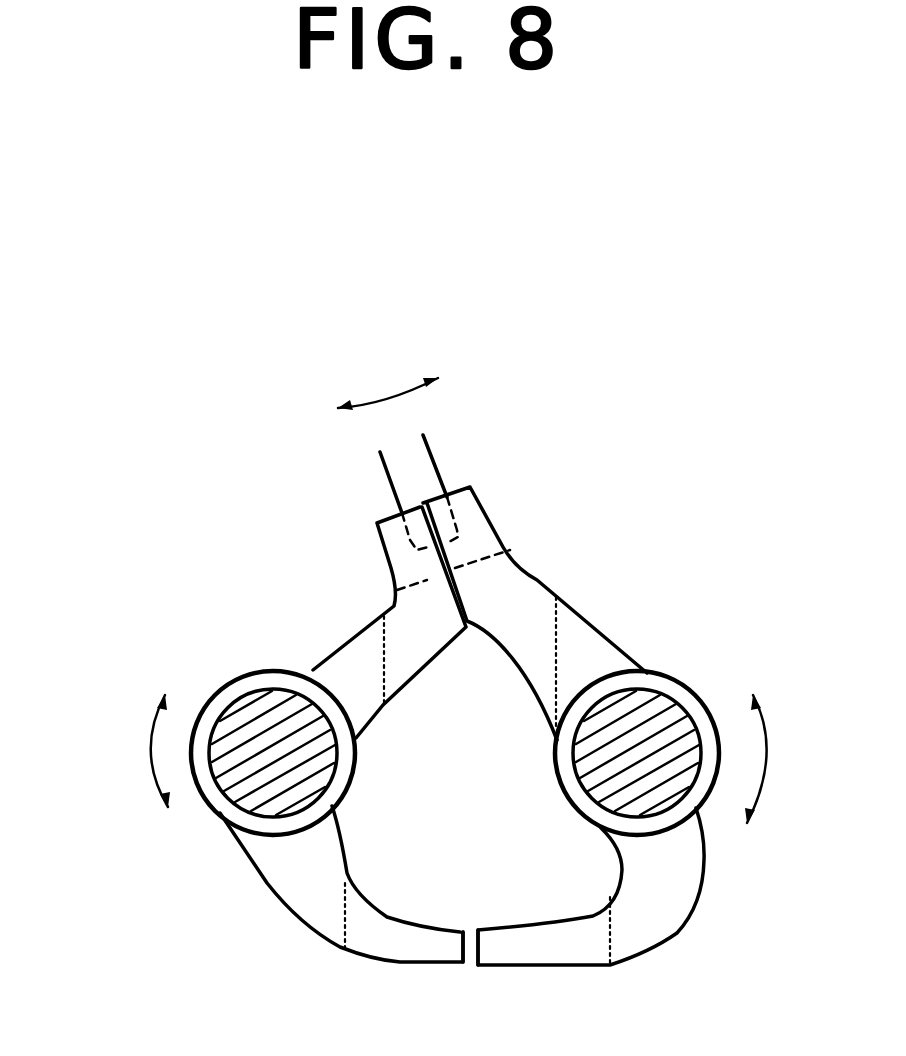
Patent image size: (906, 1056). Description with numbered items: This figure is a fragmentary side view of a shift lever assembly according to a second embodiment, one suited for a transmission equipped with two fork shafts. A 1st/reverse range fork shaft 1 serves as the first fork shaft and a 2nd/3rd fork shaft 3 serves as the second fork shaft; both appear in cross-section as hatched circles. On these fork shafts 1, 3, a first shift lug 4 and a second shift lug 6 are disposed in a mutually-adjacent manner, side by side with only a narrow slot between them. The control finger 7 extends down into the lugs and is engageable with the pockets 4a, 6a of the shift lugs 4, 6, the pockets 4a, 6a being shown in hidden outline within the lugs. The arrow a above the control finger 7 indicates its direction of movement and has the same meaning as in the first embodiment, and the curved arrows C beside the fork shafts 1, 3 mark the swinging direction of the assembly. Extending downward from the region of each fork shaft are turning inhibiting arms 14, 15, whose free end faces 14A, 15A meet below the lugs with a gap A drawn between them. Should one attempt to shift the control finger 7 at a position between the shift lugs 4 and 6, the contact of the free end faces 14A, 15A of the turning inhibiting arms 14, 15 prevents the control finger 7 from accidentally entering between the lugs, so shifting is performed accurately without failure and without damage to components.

The 1st/reverse range fork shaft 1 is at (673, 723).
The 2nd/3rd fork shaft 3 is at (240, 723).
The first shift lug 4 is at (487, 542).
The pocket of first shift lug 4a is at (487, 507).
The second shift lug 6 is at (392, 580).
The pocket of second shift lug 6a is at (373, 527).
The control finger 7 is at (422, 467).
The turning inhibiting arm 14 is at (673, 910).
The free end face of turning inhibiting arm 14A is at (460, 957).
The turning inhibiting arm 15 is at (310, 920).
The free end face of turning inhibiting arm 15A is at (460, 953).
The gap between arms A is at (473, 933).
The arrow a is at (380, 398).
The swing direction of arms C is at (150, 755).